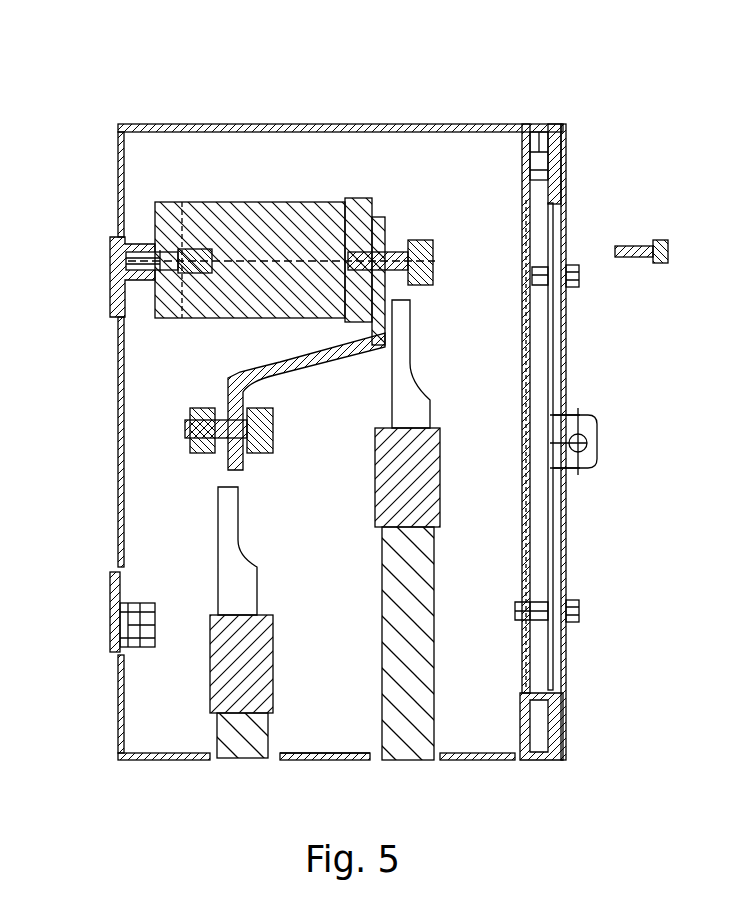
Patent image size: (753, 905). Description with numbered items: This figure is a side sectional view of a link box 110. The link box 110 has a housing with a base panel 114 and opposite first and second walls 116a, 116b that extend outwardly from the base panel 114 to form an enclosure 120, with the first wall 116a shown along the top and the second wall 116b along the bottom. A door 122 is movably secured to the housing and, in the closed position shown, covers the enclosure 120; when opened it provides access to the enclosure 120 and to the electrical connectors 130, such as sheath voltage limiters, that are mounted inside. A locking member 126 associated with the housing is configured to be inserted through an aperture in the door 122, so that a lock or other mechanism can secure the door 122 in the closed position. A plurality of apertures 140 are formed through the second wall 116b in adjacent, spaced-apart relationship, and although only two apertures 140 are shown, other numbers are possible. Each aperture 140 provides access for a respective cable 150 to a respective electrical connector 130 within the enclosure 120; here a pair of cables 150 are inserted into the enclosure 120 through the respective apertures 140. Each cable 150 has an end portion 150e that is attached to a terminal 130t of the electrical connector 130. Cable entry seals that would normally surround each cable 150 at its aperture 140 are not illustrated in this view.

The link box 110 is at (514, 86).
The base panel 114 is at (118, 450).
The first wall 116a is at (300, 124).
The second wall 116b is at (497, 762).
The enclosure 120 is at (463, 185).
The door 122 is at (565, 355).
The locking member 126 is at (598, 425).
The electrical connector 130 is at (280, 202).
The terminal 130t is at (388, 228).
The aperture 140 is at (212, 762).
The cable 150 is at (383, 683).
The end portion 150e is at (412, 330).